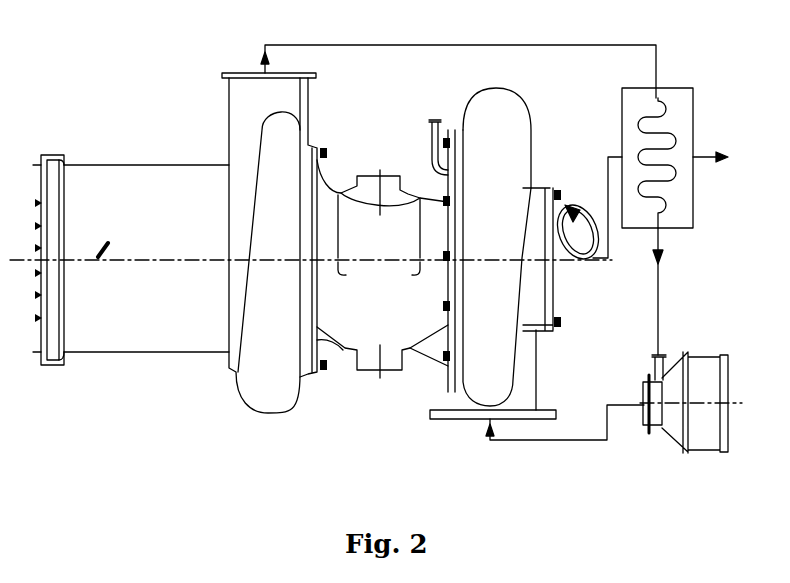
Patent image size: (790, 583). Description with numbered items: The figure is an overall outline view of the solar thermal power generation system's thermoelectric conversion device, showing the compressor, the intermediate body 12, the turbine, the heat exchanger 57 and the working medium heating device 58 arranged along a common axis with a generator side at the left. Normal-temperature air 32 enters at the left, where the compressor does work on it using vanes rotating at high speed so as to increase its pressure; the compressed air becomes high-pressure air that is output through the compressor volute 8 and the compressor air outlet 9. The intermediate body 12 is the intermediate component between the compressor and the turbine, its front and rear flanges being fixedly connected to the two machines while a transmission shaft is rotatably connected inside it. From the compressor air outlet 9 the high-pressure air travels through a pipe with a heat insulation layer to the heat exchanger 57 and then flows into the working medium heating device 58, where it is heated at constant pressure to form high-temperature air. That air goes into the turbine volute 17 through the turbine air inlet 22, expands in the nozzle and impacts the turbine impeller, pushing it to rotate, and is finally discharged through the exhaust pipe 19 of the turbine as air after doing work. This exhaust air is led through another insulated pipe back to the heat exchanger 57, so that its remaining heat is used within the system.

The normal-temperature air 32 is at (47, 165).
The compressor volute 8 is at (270, 197).
The compressor air outlet 9 is at (252, 82).
The intermediate body 12 is at (358, 215).
The turbine volute 17 is at (473, 113).
The exhaust pipe 19 is at (562, 208).
The turbine air inlet 22 is at (432, 413).
The heat exchanger 57 is at (680, 95).
The working medium heating device 58 is at (686, 355).